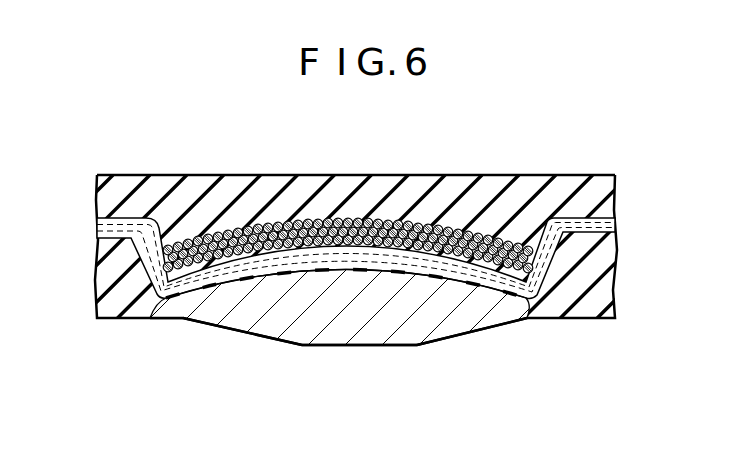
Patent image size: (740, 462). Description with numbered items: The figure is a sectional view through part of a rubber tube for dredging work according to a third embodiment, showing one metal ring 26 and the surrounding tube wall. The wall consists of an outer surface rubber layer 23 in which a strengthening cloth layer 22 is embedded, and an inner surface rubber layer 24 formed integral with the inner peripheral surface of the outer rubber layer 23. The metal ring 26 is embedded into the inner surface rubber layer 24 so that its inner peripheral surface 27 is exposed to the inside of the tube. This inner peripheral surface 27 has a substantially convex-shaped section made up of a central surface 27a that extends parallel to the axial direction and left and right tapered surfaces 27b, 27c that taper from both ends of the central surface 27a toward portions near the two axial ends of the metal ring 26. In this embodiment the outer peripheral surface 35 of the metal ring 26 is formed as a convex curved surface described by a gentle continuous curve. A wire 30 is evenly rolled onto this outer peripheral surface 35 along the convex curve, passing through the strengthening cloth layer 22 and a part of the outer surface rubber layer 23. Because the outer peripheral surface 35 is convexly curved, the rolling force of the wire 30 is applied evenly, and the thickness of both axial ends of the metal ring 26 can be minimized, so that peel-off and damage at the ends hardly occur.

The strengthening cloth layer 22 is at (617, 226).
The outer surface rubber layer 23 is at (344, 193).
The inner surface rubber layer 24 is at (108, 287).
The metal ring 26 is at (298, 323).
The inner peripheral surface 27 is at (397, 347).
The central surface 27a is at (343, 347).
The left tapered surface 27b is at (238, 331).
The right tapered surface 27c is at (460, 335).
The wire 30 is at (398, 212).
The outer peripheral surface 35 is at (400, 271).